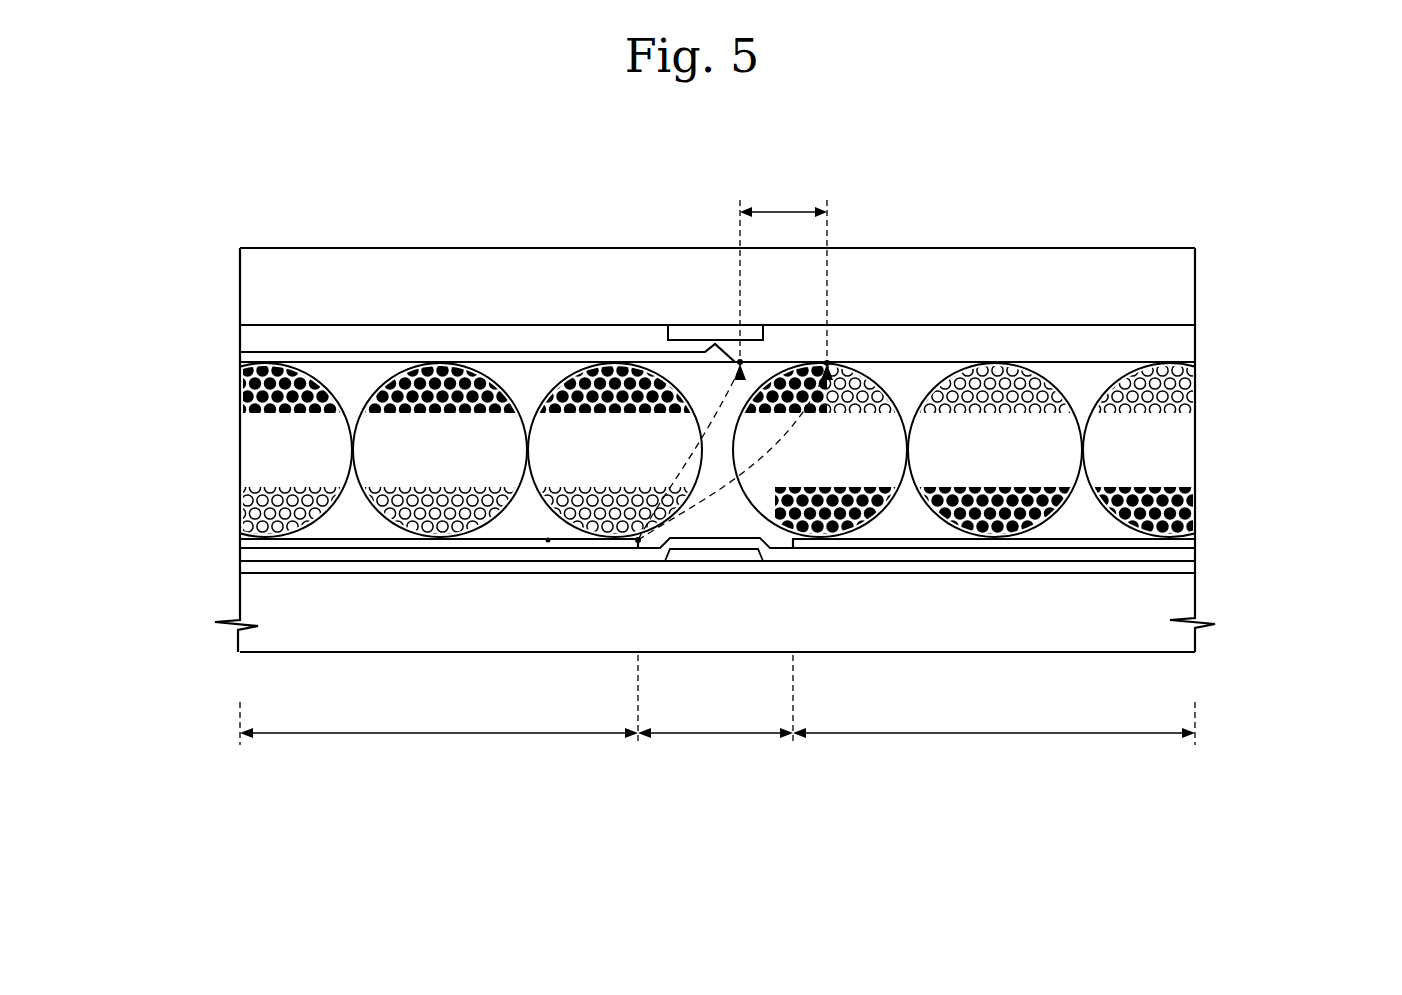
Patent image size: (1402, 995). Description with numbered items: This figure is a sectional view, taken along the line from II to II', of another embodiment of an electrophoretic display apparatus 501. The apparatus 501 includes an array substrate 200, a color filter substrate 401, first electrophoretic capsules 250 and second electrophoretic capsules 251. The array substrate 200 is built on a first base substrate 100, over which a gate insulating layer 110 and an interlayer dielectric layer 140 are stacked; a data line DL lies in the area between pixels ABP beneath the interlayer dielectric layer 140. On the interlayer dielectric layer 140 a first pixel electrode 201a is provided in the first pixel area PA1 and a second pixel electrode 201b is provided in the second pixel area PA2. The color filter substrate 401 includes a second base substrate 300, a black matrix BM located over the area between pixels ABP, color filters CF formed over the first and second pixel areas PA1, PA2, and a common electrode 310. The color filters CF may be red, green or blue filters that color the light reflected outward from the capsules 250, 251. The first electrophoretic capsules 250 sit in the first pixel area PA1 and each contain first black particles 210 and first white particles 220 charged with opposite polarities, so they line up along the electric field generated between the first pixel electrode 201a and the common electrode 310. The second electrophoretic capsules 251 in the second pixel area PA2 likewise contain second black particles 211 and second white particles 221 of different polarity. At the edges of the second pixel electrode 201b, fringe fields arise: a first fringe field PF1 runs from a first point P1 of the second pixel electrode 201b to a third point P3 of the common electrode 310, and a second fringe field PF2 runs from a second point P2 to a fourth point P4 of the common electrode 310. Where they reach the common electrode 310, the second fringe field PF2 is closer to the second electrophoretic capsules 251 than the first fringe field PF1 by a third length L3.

The electrophoretic display apparatus 501 is at (1310, 196).
The color filter substrate 401 is at (757, 283).
The second base substrate 300 is at (1185, 285).
The color filters CF is at (1185, 338).
The black matrix BM is at (690, 335).
The common electrode 310 is at (762, 362).
The array substrate 200 is at (748, 598).
The first base substrate 100 is at (1185, 597).
The gate insulating layer 110 is at (1195, 561).
The data line DL is at (717, 556).
The interlayer dielectric layer 140 is at (1195, 549).
The first pixel electrode 201a is at (1195, 540).
The second pixel electrode 201b is at (245, 542).
The first electrophoretic capsule 250 is at (1042, 364).
The first black particles 210 is at (805, 363).
The first white particles 220 is at (1178, 398).
The second electrophoretic capsule 251 is at (392, 364).
The second black particles 211 is at (612, 368).
The second white particles 221 is at (257, 494).
The first point P1 is at (638, 542).
The second point P2 is at (548, 542).
The third point P3 is at (827, 361).
The fourth point P4 is at (740, 360).
The first fringe field PF1 is at (790, 452).
The second fringe field PF2 is at (693, 447).
The third length L3 is at (783, 279).
The first pixel area PA1 is at (994, 710).
The second pixel area PA2 is at (439, 710).
The area between pixels ABP is at (715, 746).
The section line start II is at (239, 673).
The section line end II' is at (1197, 673).